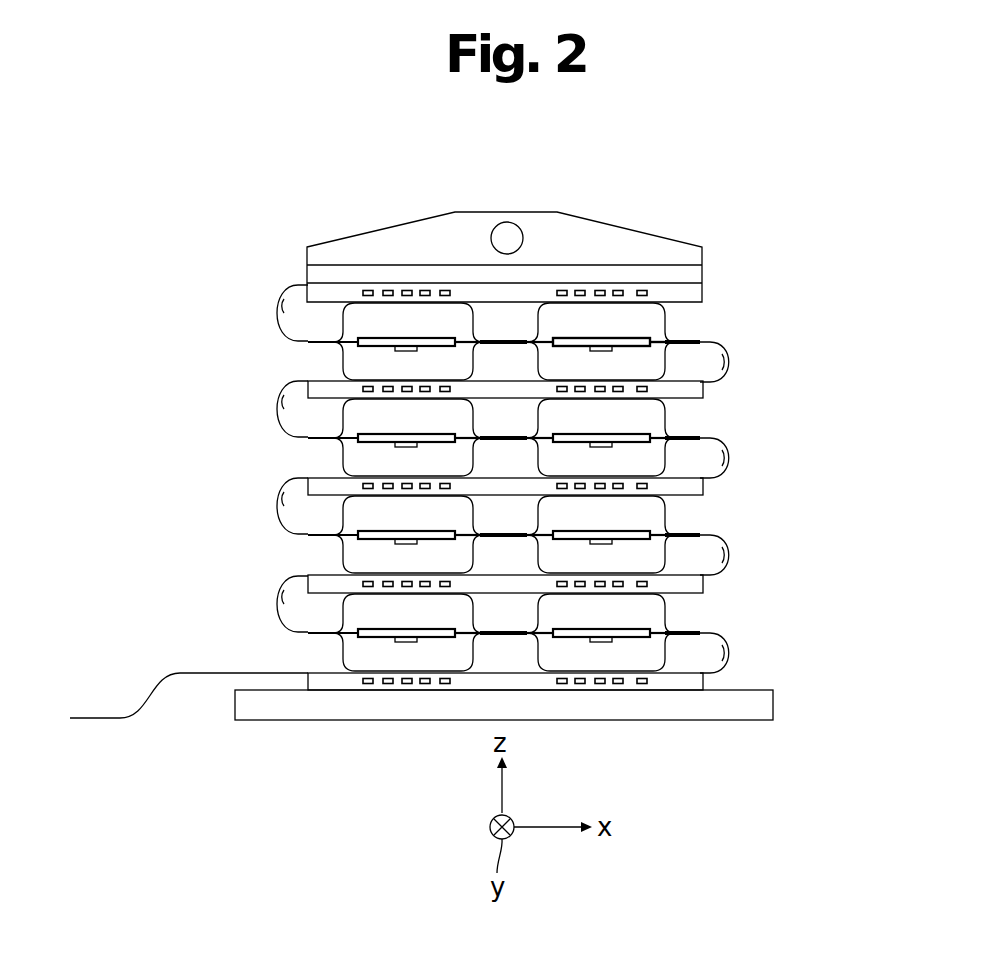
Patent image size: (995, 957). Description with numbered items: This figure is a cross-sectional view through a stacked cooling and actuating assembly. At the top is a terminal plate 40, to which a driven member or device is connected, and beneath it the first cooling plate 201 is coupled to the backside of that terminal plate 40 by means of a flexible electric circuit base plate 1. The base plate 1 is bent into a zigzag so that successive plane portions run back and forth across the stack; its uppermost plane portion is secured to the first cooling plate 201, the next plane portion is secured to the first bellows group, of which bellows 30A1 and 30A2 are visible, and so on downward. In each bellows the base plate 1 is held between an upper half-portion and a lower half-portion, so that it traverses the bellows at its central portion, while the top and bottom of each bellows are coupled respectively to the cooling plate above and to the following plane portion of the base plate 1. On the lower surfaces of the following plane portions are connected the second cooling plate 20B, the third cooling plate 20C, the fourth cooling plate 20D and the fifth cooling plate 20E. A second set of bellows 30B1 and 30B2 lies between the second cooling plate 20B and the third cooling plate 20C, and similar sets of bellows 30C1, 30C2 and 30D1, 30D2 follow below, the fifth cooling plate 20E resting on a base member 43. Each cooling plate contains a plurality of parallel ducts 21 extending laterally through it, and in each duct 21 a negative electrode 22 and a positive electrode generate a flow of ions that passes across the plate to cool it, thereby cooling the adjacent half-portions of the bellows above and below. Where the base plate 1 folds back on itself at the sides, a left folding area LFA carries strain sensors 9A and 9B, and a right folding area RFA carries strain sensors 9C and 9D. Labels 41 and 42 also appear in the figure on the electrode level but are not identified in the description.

The flexible electric circuit base plate 1 is at (672, 332).
The first cooling plate 201 is at (706, 291).
The second cooling plate 20B is at (710, 389).
The third cooling plate 20C is at (710, 487).
The fourth cooling plate 20D is at (710, 583).
The fifth cooling plate 20E is at (710, 680).
The duct 21 is at (750, 433).
The negative electrode 22 is at (627, 338).
The bellows 30A1 is at (340, 366).
The bellows 30A2 is at (670, 363).
The bellows 30B1 is at (340, 460).
The bellows 30B2 is at (668, 462).
The bellows 30C1 is at (340, 557).
The bellows 30C2 is at (666, 560).
The bellows 30D1 is at (340, 653).
The bellows 30D2 is at (665, 657).
The terminal plate 40 is at (668, 275).
The electrode 41 is at (377, 338).
The electrode 42 is at (577, 338).
The base member 43 is at (773, 705).
The strain sensor 9A is at (227, 450).
The strain sensor 9B is at (280, 302).
The strain sensor 9C is at (791, 504).
The strain sensor 9D is at (730, 357).
The left folding area LFA is at (302, 285).
The right folding area RFA is at (720, 343).